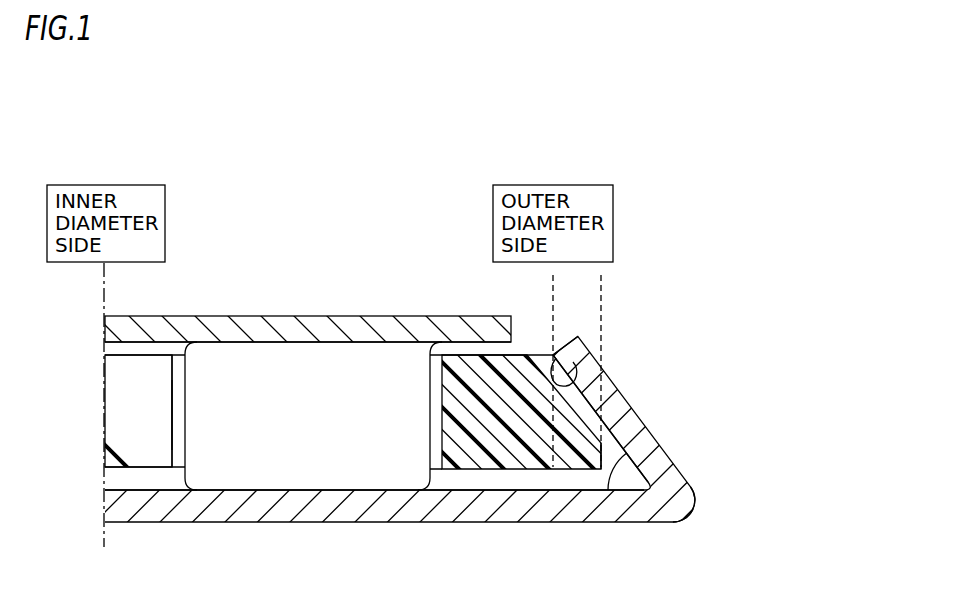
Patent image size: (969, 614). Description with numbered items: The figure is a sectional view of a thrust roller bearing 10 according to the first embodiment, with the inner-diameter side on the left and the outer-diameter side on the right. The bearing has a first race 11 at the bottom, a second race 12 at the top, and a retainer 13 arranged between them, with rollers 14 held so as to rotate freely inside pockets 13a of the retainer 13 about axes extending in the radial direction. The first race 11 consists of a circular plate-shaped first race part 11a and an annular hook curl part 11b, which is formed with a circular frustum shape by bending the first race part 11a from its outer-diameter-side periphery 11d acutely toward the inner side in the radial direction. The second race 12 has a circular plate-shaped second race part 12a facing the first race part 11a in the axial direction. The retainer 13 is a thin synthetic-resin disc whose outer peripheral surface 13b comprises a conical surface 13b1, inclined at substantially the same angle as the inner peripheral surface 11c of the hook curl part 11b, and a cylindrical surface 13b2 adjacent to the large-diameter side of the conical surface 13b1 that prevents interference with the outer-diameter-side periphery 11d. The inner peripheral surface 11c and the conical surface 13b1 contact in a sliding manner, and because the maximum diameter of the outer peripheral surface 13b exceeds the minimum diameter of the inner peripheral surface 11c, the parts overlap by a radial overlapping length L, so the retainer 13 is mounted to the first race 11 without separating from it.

The thrust roller bearing 10 is at (585, 142).
The first race 11 is at (432, 530).
The first race part 11a is at (507, 510).
The hook curl part 11b is at (640, 439).
The inner peripheral surface 11c is at (564, 365).
The outer-diameter-side periphery 11d is at (677, 500).
The second race 12 is at (420, 312).
The second race part 12a is at (250, 328).
The retainer 13 is at (162, 348).
The pocket 13a is at (172, 412).
The outer peripheral surface 13b is at (644, 395).
The conical surface 13b1 is at (584, 381).
The cylindrical surface 13b2 is at (603, 455).
The roller 14 is at (328, 378).
The overlapping length L is at (517, 285).